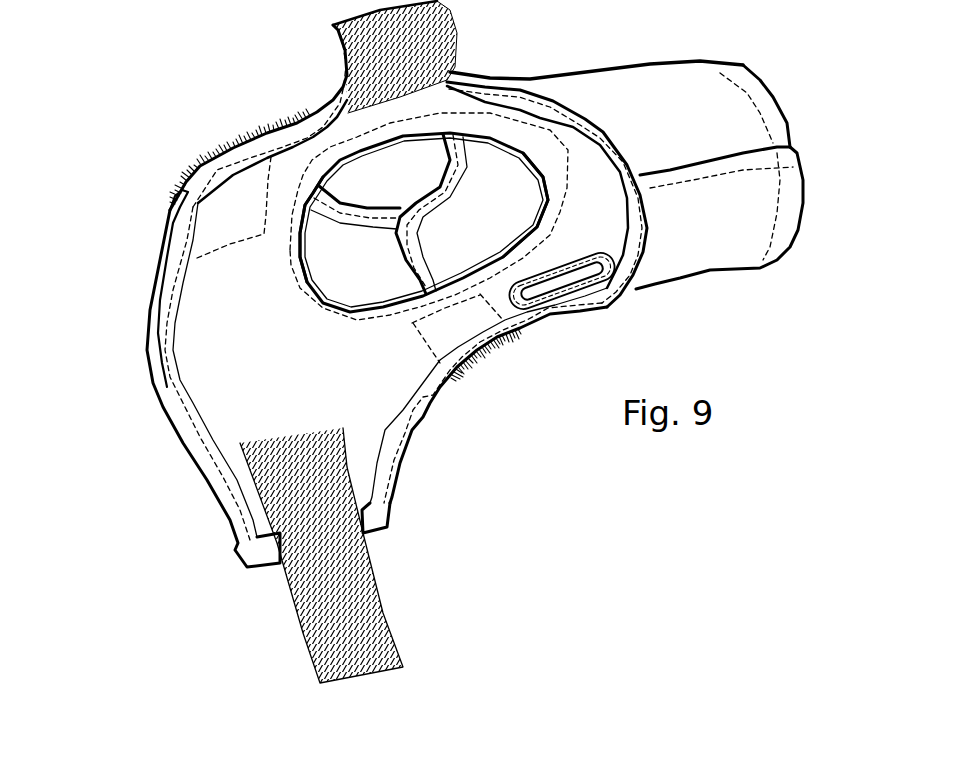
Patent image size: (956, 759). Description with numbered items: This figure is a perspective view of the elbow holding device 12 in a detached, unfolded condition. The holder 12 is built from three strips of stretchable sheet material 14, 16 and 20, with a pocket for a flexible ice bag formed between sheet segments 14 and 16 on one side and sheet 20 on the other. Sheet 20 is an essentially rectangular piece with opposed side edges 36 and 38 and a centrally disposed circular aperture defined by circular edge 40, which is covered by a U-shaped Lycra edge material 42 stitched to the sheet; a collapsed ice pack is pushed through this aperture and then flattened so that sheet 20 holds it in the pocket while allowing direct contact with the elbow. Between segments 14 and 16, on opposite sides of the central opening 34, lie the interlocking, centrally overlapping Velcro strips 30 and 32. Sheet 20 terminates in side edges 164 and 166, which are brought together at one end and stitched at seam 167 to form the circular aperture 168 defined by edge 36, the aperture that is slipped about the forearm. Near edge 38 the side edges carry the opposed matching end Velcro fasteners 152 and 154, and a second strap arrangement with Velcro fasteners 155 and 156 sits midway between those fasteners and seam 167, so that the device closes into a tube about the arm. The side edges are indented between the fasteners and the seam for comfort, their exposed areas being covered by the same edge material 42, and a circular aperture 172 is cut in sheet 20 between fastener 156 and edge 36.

The holding device 12 is at (527, 72).
The sheet segment 14 is at (354, 271).
The sheet segment 16 is at (479, 234).
The sheet material 20 is at (284, 393).
The Velcro strip 30 is at (398, 210).
The Velcro strip 32 is at (382, 217).
The central opening 34 is at (417, 140).
The side edge 36 is at (773, 108).
The side edge 38 is at (157, 348).
The circular edge 40 is at (344, 308).
The U-shaped edge material 42 is at (310, 307).
The Velcro fastener 152 is at (217, 157).
The Velcro fastener 154 is at (320, 634).
The Velcro fastener 155 is at (497, 355).
The Velcro fastener 156 is at (341, 52).
The side edge 164 is at (298, 128).
The side edge 166 is at (630, 255).
The seam 167 is at (757, 150).
The circular aperture 168 is at (797, 199).
The circular aperture 172 is at (555, 289).